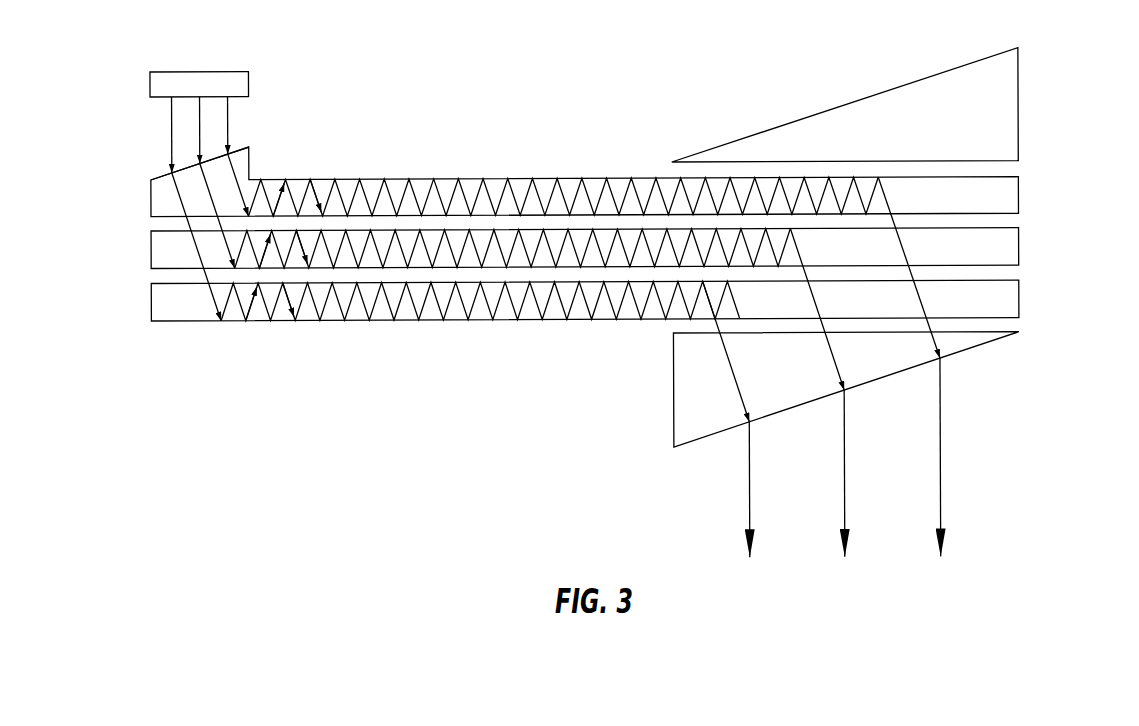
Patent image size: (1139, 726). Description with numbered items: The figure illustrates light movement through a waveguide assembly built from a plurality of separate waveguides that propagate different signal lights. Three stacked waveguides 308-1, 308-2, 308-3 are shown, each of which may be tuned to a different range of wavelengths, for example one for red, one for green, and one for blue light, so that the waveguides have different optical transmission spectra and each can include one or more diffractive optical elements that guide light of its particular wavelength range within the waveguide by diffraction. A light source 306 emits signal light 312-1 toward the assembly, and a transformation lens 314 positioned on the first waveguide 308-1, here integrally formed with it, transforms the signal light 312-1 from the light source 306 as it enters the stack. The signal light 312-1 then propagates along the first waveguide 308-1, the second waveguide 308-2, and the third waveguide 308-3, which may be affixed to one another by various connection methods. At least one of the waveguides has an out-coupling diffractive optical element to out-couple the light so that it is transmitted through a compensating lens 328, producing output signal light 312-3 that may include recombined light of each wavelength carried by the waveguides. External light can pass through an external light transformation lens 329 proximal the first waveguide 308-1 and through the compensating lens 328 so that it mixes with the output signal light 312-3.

The light source 306 is at (241, 72).
The signal light 312-1 is at (229, 120).
The transformation lens 314 is at (158, 165).
The first waveguide 308-1 is at (1019, 200).
The second waveguide 308-2 is at (1019, 252).
The third waveguide 308-3 is at (1019, 303).
The external light transformation lens 329 is at (1019, 69).
The compensating lens 328 is at (950, 375).
The output signal light 312-3 is at (748, 491).